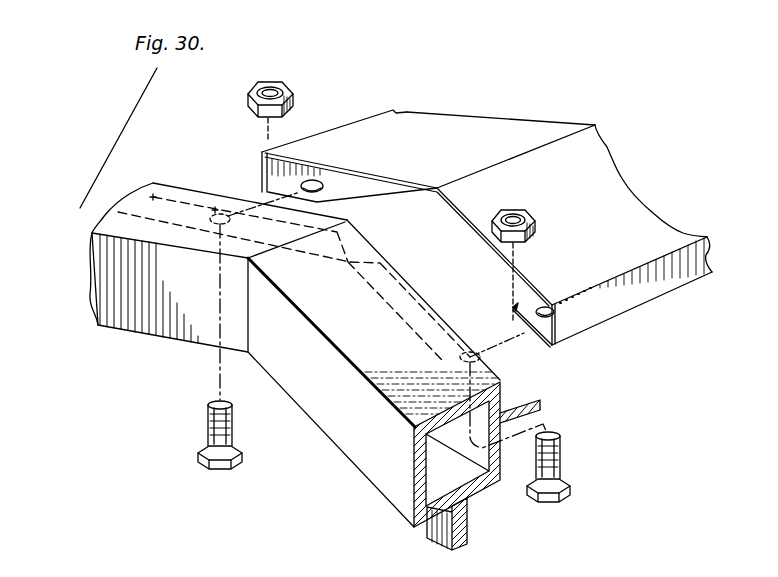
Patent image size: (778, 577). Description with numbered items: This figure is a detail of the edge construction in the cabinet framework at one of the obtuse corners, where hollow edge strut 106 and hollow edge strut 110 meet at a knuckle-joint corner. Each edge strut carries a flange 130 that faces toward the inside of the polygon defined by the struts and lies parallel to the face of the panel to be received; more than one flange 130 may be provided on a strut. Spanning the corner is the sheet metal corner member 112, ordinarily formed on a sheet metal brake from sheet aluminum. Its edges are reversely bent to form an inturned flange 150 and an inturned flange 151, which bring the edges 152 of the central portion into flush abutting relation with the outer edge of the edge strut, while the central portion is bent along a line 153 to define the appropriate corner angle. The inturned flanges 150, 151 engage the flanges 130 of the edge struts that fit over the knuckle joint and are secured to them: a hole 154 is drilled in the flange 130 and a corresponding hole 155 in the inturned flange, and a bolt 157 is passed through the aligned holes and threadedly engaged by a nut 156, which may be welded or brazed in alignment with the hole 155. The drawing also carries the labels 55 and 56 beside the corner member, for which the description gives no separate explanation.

The edge strut 106 is at (153, 312).
The edge strut 110 is at (382, 467).
The sheet metal corner member 112 is at (645, 200).
The flange 130 is at (155, 186).
The inturned flange 150 is at (368, 178).
The inturned flange 151 is at (530, 294).
The edge of central portion 152 is at (447, 186).
The bend line 153 is at (540, 143).
The hole 154 is at (217, 208).
The hole 155 is at (318, 184).
The nut 156 is at (280, 84).
The bolt 157 is at (244, 455).
The tab hole 55 is at (540, 305).
The nut 56 is at (528, 220).